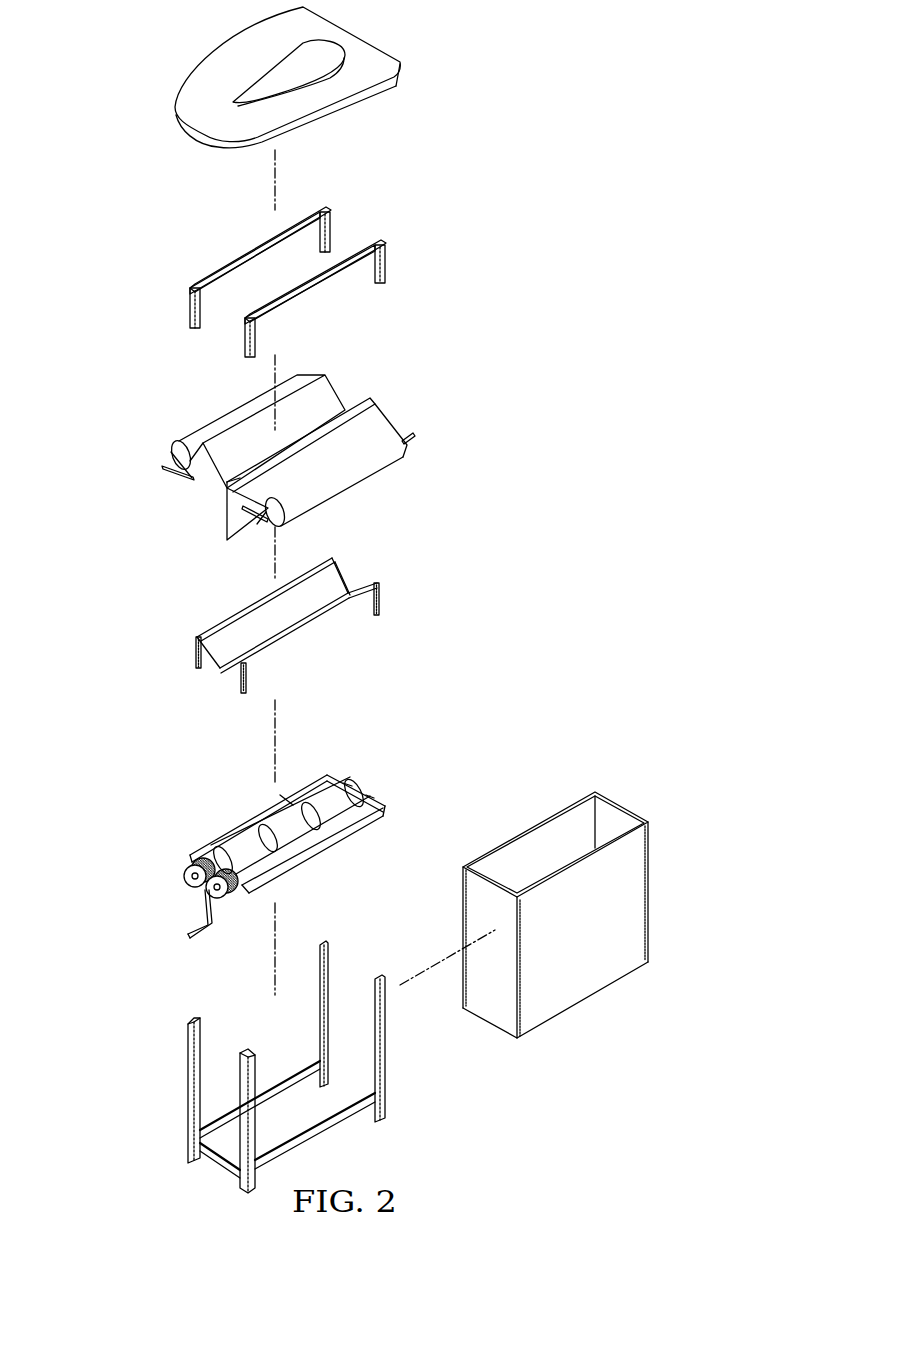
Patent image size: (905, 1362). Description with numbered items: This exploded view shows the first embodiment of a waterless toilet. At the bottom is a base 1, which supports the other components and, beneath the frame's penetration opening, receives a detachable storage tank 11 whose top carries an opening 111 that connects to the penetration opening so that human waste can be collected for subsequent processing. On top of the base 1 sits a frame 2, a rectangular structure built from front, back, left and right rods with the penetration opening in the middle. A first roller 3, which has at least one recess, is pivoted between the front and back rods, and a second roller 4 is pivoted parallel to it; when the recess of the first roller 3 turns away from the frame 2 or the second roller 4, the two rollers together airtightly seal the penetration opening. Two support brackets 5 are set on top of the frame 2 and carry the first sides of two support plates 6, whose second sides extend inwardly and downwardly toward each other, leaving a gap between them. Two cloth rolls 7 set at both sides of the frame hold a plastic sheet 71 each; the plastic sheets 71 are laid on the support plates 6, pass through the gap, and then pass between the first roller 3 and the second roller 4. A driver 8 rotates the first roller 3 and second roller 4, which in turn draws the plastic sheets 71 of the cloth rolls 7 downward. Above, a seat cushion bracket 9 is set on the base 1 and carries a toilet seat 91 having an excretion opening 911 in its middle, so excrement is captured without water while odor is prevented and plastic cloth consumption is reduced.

The base 1 is at (143, 1100).
The storage tank 11 is at (601, 907).
The opening 111 is at (607, 820).
The frame 2 is at (213, 846).
The first roller 3 is at (268, 832).
The second roller 4 is at (287, 802).
The support brackets 5 is at (313, 635).
The support plates 6 is at (253, 621).
The cloth rolls 7 is at (315, 432).
The plastic sheet 71 is at (342, 390).
The driver 8 is at (158, 890).
The seat cushion bracket 9 is at (178, 308).
The toilet seat 91 is at (214, 77).
The excretion opening 911 is at (295, 62).